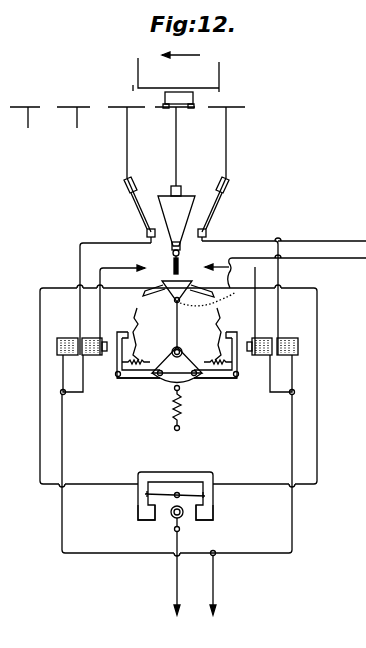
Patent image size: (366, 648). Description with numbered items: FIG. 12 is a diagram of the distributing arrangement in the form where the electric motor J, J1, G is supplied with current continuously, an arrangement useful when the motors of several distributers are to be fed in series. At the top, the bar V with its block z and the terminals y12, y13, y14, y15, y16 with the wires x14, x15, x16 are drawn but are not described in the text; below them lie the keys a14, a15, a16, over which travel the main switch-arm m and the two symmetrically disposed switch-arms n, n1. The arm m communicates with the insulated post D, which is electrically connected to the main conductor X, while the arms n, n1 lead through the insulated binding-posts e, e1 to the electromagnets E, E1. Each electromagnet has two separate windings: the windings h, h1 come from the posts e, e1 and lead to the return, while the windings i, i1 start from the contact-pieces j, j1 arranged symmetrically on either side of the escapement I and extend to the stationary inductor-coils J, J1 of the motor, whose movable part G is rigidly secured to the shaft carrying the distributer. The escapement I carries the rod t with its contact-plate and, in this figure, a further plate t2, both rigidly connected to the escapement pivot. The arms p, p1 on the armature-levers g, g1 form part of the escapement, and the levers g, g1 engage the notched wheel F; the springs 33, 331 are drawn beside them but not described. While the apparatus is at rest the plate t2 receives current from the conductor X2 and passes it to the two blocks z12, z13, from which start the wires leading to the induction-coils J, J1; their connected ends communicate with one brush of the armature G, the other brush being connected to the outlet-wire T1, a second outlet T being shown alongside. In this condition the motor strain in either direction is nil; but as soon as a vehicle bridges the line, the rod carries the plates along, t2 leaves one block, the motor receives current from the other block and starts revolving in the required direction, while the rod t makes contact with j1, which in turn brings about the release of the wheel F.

The reciprocating bar V is at (176, 72).
The block on bar V z is at (196, 98).
The contact terminal y12 is at (25, 117).
The contact terminal y13 is at (74, 117).
The contact terminal y14 is at (126, 117).
The contact terminal y15 is at (175, 117).
The contact terminal y16 is at (226, 117).
The connecting wire x14 is at (139, 153).
The connecting wire x15 is at (189, 157).
The connecting wire x16 is at (239, 153).
The key a14 is at (123, 185).
The key a15 is at (191, 179).
The key a16 is at (232, 186).
The switch-arm n is at (131, 211).
The switch-arm n1 is at (224, 211).
The insulated binding-post e is at (146, 233).
The insulated binding-post e1 is at (207, 233).
The main switch-arm m is at (176, 221).
The insulated post D is at (180, 244).
The main conductor X is at (284, 284).
The conductor X2 is at (330, 262).
The contact-piece j is at (123, 294).
The contact-piece j1 is at (214, 293).
The further plate t2 is at (172, 299).
The block z12 is at (143, 294).
The block z13 is at (215, 295).
The rod t is at (183, 326).
The escapement I is at (177, 389).
The armature-lever g is at (118, 372).
The armature-lever g1 is at (238, 372).
The notched wheel F is at (141, 334).
The spring 33 is at (136, 363).
The spring 331 is at (218, 357).
The arm p is at (150, 379).
The arm p1 is at (204, 379).
The winding h is at (67, 337).
The winding i is at (94, 337).
The winding h1 is at (259, 337).
The winding i1 is at (287, 337).
The electromagnet E is at (72, 375).
The electromagnet E1 is at (282, 375).
The movable part of the motor G is at (175, 509).
The inductor-coil J is at (138, 518).
The inductor-coil J1 is at (213, 518).
The terminal wire T is at (220, 583).
The outlet-wire T1 is at (164, 573).